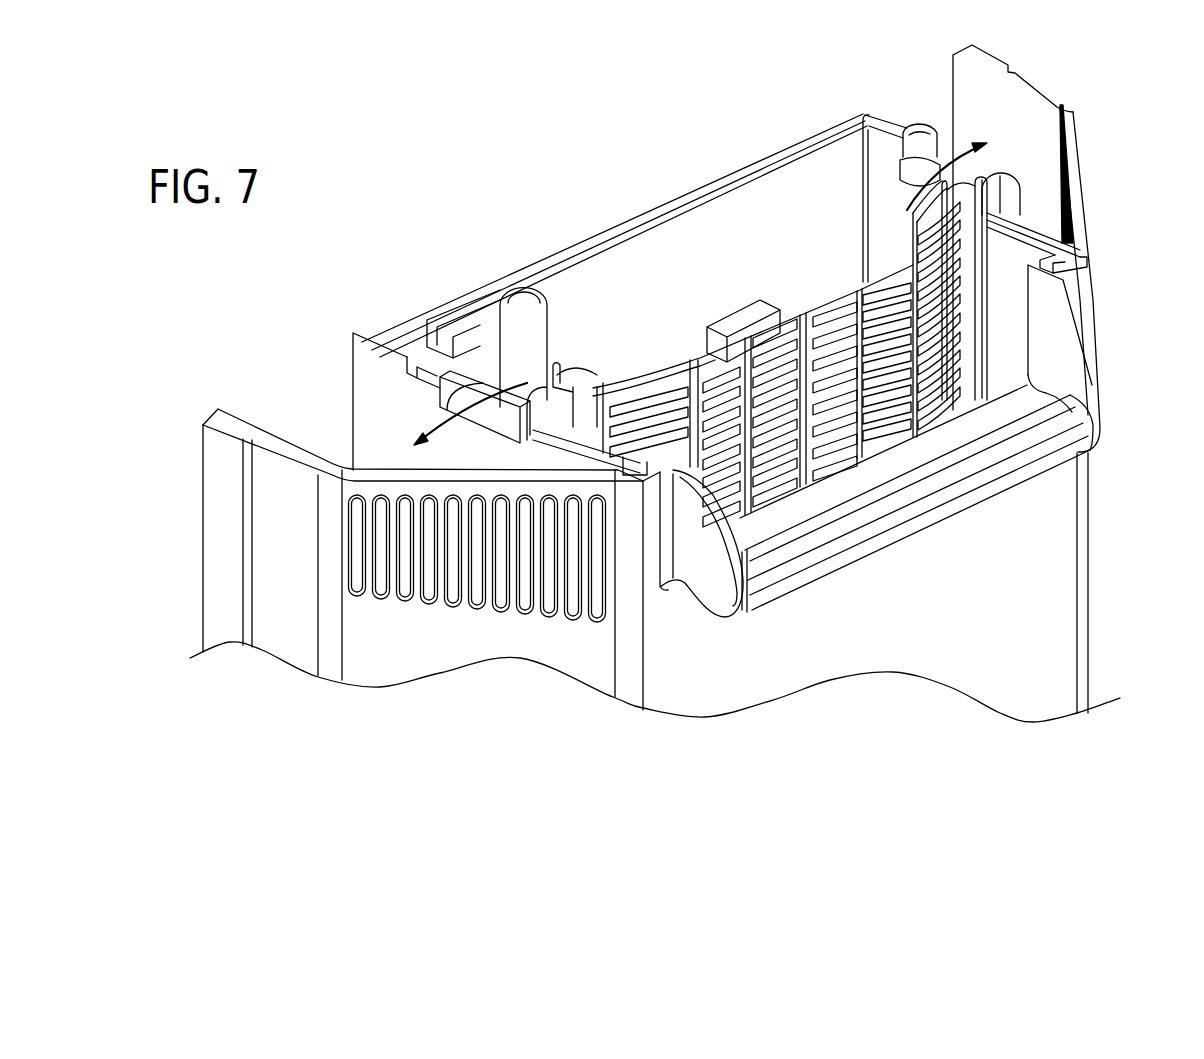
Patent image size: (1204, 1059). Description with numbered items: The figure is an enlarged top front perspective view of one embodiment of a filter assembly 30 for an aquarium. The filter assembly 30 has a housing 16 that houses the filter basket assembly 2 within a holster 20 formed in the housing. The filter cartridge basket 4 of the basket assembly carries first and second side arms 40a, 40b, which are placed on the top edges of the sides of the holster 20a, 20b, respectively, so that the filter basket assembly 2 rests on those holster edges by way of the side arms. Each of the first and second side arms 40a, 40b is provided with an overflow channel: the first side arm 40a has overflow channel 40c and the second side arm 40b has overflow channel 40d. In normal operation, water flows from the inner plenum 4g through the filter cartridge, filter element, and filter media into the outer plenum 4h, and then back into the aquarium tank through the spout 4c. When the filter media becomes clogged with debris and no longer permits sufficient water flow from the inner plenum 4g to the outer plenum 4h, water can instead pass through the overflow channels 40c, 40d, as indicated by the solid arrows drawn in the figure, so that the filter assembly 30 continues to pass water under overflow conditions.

The filter basket assembly 2 is at (861, 113).
The filter cartridge basket 4 is at (740, 172).
The spout 4c is at (1020, 463).
The inner plenum 4g is at (695, 240).
The outer plenum 4h is at (1000, 323).
The housing 16 is at (222, 480).
The holster 20 is at (365, 376).
The first holster side top edge 20a is at (420, 376).
The second holster side top edge 20b is at (1032, 228).
The filter assembly 30 is at (228, 348).
The first side arm 40a is at (478, 430).
The second side arm 40b is at (1007, 190).
The first overflow channel 40c is at (477, 393).
The second overflow channel 40d is at (933, 168).